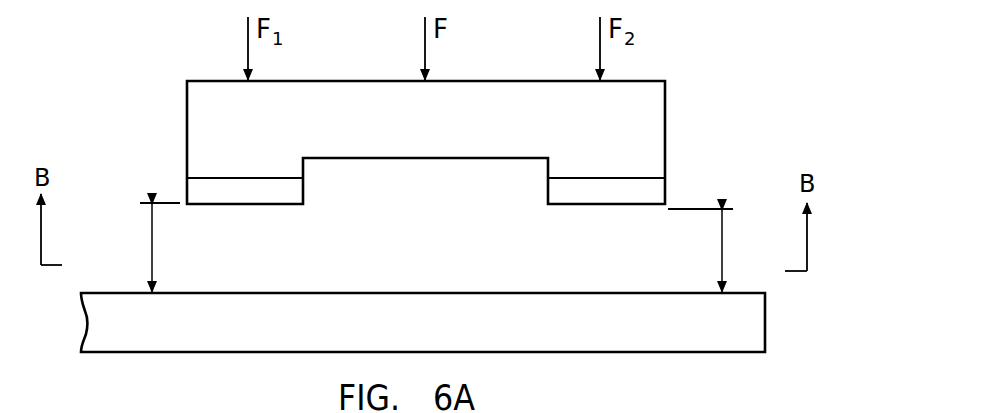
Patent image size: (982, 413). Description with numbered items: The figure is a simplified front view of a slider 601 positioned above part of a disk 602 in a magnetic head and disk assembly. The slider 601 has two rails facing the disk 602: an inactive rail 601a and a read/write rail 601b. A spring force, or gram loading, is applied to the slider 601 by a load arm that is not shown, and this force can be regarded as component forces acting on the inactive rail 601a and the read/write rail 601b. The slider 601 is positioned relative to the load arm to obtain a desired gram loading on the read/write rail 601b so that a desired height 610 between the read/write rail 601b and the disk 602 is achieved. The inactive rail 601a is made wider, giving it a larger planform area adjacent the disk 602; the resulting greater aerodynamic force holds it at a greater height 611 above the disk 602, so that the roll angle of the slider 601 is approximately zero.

The slider 601 is at (665, 128).
The inactive rail 601a is at (238, 205).
The read/write rail 601b is at (588, 205).
The disk 602 is at (110, 291).
The height 610 is at (707, 250).
The height 611 is at (158, 247).